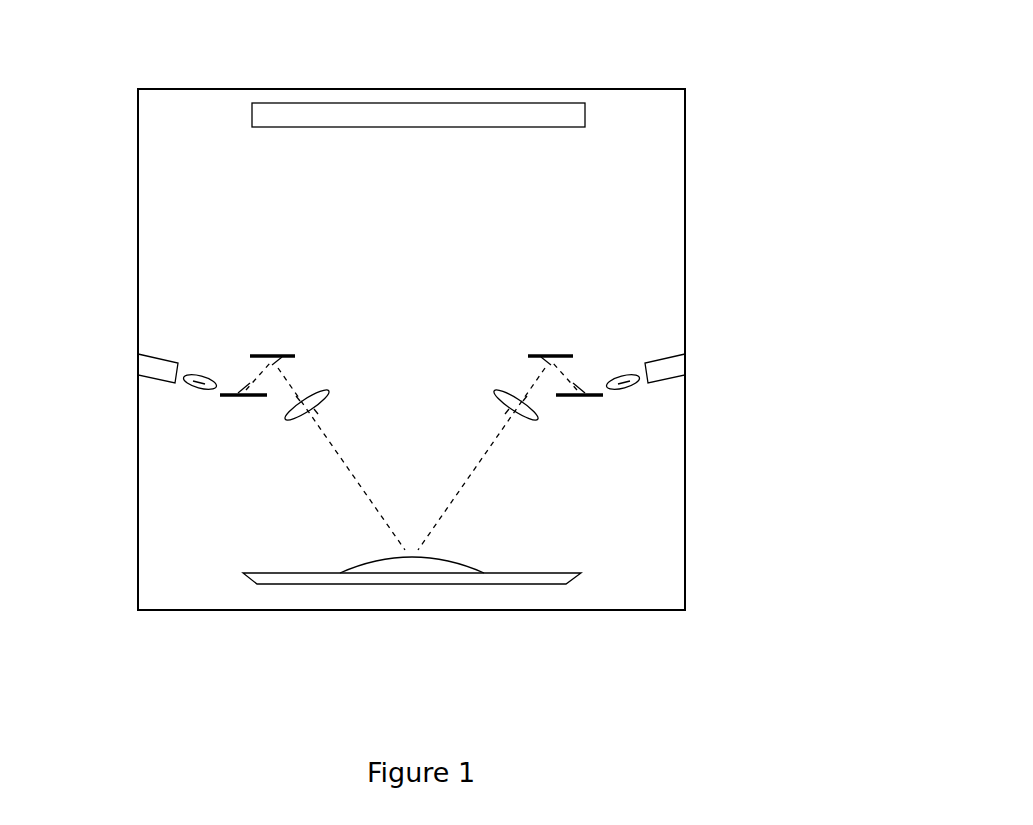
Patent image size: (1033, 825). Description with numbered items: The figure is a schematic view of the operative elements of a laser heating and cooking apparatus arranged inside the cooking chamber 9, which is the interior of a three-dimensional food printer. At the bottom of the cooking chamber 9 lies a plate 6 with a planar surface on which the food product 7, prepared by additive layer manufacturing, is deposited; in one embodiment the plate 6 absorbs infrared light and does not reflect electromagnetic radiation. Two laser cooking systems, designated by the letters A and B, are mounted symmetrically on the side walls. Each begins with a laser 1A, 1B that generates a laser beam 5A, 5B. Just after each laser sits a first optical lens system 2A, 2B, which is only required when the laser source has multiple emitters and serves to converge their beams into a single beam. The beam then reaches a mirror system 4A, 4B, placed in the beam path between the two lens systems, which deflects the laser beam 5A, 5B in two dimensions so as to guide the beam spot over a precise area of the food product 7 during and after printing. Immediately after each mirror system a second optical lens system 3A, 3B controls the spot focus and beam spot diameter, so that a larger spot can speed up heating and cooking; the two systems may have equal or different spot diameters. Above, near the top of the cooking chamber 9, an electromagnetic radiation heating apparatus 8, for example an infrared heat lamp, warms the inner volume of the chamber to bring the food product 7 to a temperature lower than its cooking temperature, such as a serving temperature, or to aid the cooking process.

The laser 1A is at (160, 355).
The laser 1B is at (663, 355).
The first optical lens system 2A is at (190, 391).
The first optical lens system 2B is at (633, 391).
The second optical lens system 3A is at (266, 425).
The second optical lens system 3B is at (557, 425).
The mirror system 4A is at (233, 385).
The mirror system 4B is at (590, 385).
The laser beam 5A is at (340, 468).
The laser beam 5B is at (483, 468).
The plate 6 is at (530, 590).
The food product 7 is at (406, 578).
The electromagnetic radiation heating apparatus 8 is at (407, 100).
The cooking chamber 9 is at (688, 167).